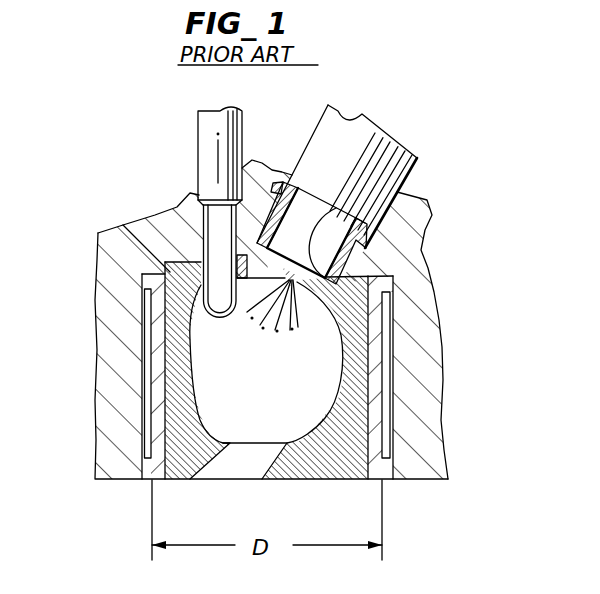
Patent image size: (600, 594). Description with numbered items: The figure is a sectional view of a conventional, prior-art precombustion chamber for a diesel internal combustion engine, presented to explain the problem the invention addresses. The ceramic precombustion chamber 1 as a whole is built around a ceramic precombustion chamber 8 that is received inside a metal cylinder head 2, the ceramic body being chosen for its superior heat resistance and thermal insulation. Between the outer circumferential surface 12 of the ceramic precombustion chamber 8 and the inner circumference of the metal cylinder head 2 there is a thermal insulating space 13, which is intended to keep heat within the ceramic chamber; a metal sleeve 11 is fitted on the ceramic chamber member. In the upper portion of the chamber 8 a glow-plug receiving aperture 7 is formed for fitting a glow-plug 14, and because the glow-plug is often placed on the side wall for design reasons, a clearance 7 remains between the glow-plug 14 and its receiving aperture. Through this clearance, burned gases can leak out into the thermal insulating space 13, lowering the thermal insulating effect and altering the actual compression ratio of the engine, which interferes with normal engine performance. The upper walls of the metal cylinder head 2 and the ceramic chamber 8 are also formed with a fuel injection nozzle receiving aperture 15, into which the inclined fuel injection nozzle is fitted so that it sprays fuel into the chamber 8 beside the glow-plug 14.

The ceramic precombustion chamber 1 is at (410, 275).
The metal cylinder head 2 is at (423, 460).
The glow-plug receiving aperture 7 is at (140, 232).
The ceramic precombustion chamber 8 is at (290, 383).
The metal sleeve 11 is at (160, 397).
The outer circumferential surface 12 is at (152, 358).
The thermal insulating space 13 is at (387, 353).
The glow-plug 14 is at (190, 204).
The fuel injection nozzle receiving aperture 15 is at (353, 168).